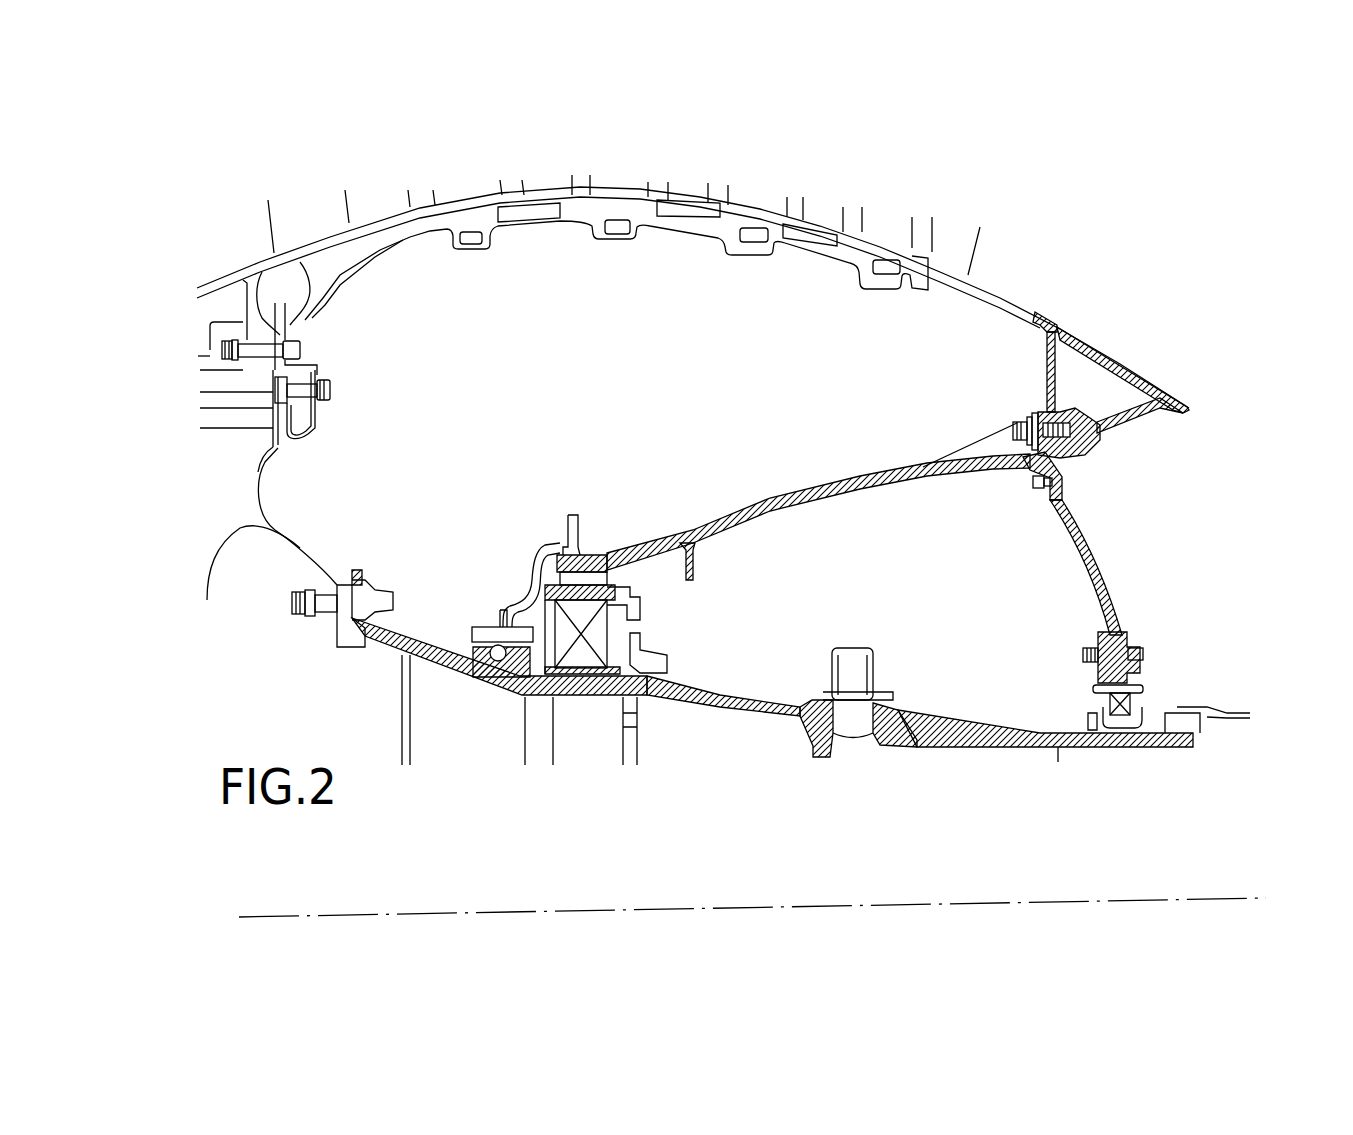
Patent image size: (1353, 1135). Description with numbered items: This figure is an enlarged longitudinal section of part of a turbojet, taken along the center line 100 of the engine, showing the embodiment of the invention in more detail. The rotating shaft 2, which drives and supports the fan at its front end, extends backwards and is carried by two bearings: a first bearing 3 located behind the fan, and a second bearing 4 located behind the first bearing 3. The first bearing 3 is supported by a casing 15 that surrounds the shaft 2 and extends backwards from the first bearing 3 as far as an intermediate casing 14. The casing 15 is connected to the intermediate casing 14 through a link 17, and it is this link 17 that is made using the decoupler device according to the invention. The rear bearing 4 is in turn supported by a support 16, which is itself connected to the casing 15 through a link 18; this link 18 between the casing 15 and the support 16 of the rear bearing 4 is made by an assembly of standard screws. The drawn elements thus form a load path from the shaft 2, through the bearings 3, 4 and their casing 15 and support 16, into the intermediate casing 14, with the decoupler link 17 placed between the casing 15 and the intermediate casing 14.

The rotating shaft 2 is at (716, 709).
The first bearing 3 is at (577, 660).
The second bearing 4 is at (1142, 702).
The intermediate casing 14 is at (1094, 344).
The casing 15 is at (770, 505).
The support 16 is at (1094, 587).
The link 17 is at (1011, 429).
The link 18 is at (1031, 480).
The center line 100 is at (1141, 900).